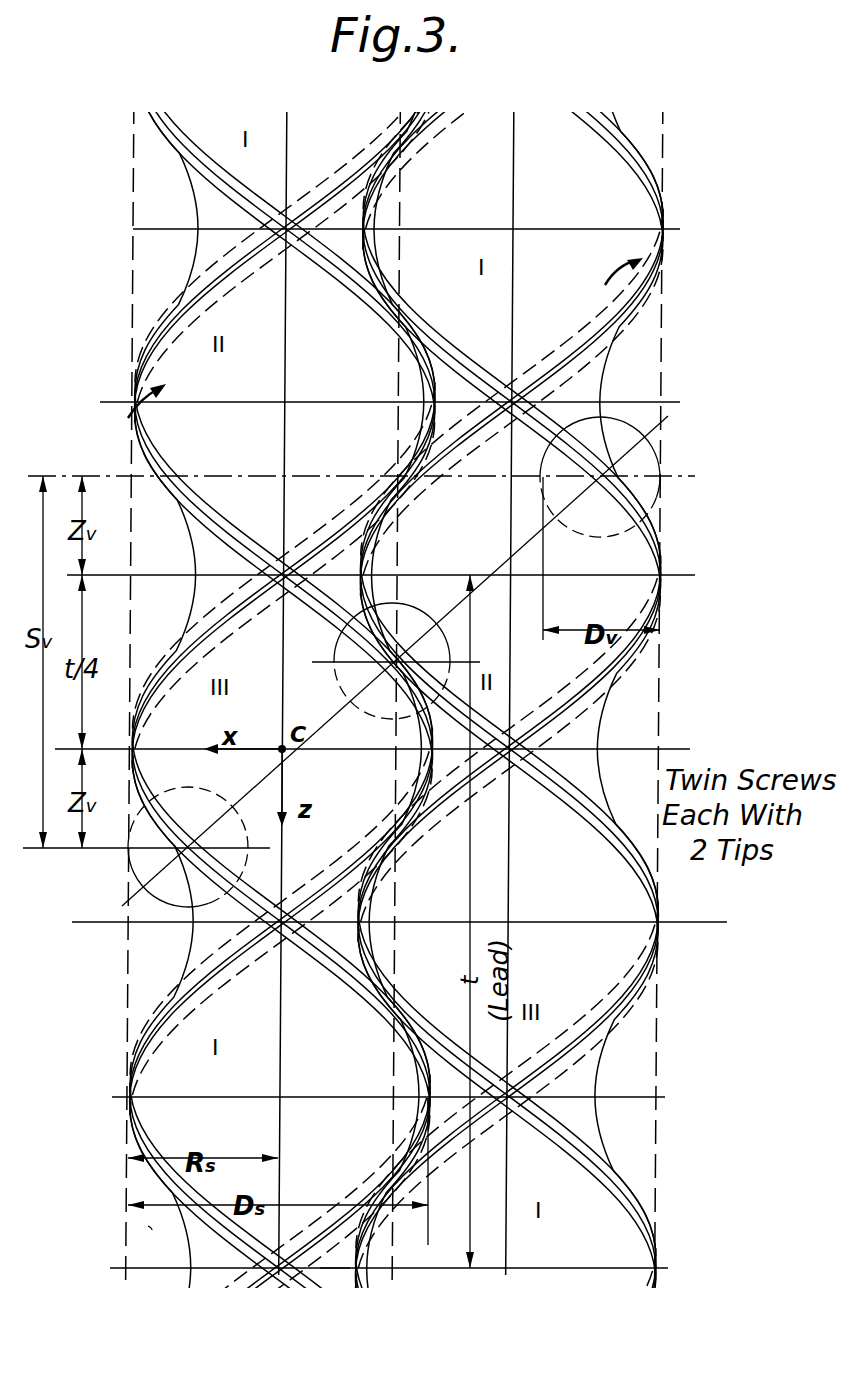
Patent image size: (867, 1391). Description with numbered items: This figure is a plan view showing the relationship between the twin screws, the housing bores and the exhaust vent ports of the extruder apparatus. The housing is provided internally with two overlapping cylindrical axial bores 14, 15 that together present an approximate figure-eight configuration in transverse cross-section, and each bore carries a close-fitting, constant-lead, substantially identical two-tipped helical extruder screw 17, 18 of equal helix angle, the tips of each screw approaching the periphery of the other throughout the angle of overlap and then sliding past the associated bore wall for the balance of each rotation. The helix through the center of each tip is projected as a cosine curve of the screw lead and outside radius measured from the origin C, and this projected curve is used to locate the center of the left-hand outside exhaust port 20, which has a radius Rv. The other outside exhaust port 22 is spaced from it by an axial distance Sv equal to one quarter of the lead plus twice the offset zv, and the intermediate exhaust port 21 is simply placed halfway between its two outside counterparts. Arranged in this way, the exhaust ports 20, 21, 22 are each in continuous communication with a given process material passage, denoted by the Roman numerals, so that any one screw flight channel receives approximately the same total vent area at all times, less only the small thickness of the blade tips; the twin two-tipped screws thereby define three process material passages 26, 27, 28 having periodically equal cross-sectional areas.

The cylindrical axial bore 14 is at (128, 1049).
The cylindrical axial bore 15 is at (658, 1002).
The two-tipped helical extruder screw 17 is at (205, 933).
The two-tipped helical extruder screw 18 is at (612, 905).
The left-hand outside exhaust port 20 is at (137, 882).
The intermediate exhaust port 21 is at (422, 597).
The outside exhaust port 22 is at (666, 462).
The process material passage 26 is at (150, 1228).
The process material passage 27 is at (430, 1088).
The process material passage 28 is at (333, 1260).